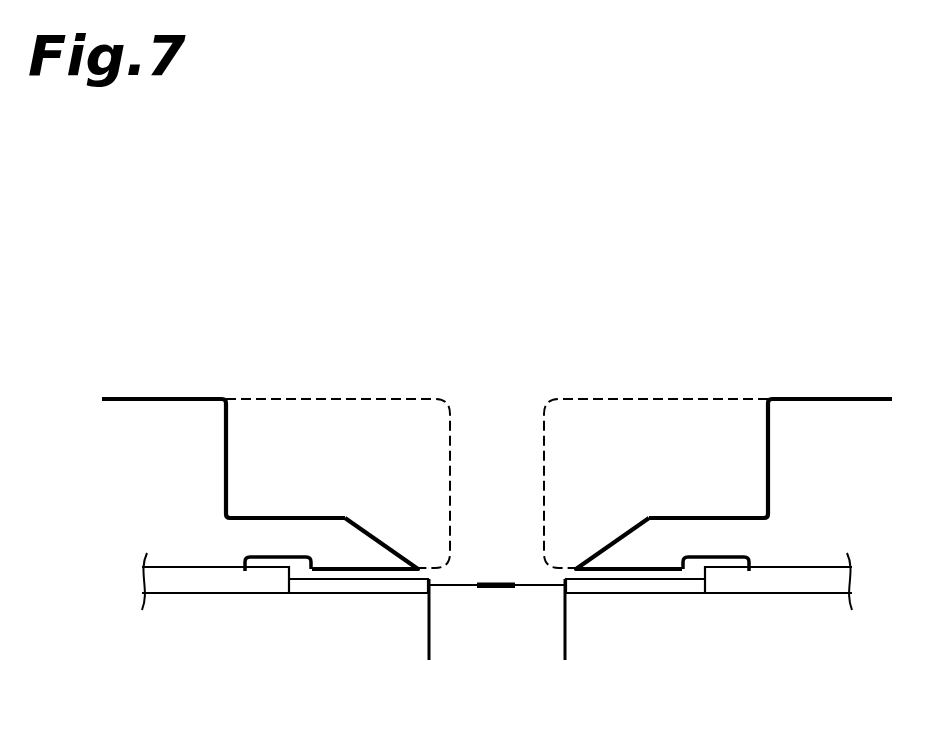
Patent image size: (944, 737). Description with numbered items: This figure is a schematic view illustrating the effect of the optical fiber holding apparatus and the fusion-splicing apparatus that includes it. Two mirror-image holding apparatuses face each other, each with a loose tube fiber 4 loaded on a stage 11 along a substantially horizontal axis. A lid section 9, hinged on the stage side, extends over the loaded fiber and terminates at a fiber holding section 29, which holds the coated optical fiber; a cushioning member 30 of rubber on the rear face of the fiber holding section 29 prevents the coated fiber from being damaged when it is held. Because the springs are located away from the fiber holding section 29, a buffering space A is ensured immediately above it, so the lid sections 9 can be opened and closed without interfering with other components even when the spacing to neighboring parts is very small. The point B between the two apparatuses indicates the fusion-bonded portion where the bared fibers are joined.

The loose tube fiber 4 is at (193, 561).
The lid section 9 is at (173, 416).
The stage 11 is at (403, 600).
The fiber holding section 29 is at (310, 532).
The cushioning member 30 is at (378, 567).
The buffering space A is at (365, 441).
The fusion-bonded portion B is at (493, 596).